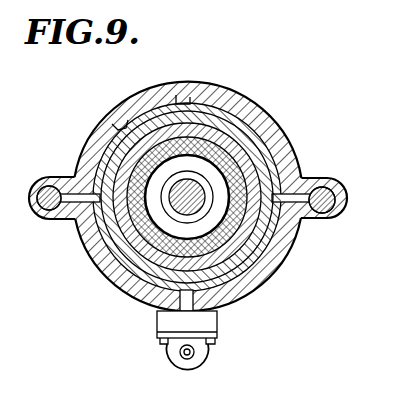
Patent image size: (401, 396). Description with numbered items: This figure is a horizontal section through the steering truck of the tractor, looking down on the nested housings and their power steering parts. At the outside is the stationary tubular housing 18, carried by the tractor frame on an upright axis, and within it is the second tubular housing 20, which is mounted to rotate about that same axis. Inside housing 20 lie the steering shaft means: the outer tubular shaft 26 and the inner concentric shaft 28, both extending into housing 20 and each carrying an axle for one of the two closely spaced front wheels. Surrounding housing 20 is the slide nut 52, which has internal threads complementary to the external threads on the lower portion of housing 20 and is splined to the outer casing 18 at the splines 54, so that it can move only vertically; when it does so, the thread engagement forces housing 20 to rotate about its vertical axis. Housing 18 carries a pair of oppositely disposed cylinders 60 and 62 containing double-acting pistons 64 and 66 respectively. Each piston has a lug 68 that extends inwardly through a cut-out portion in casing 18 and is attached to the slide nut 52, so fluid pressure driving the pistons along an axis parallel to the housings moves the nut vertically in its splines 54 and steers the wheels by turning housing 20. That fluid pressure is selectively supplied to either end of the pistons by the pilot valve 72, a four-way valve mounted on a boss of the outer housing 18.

The stationary tubular housing 18 is at (150, 94).
The second tubular housing 20 is at (291, 252).
The outer tubular shaft 26 is at (136, 299).
The inner concentric shaft 28 is at (236, 131).
The slide nut 52 is at (277, 150).
The splines 54 is at (200, 88).
The cylinder 60 is at (326, 178).
The cylinder 62 is at (57, 177).
The double-acting piston 64 is at (338, 210).
The double-acting piston 66 is at (54, 219).
The lug 68 is at (75, 178).
The pilot valve 72 is at (212, 360).